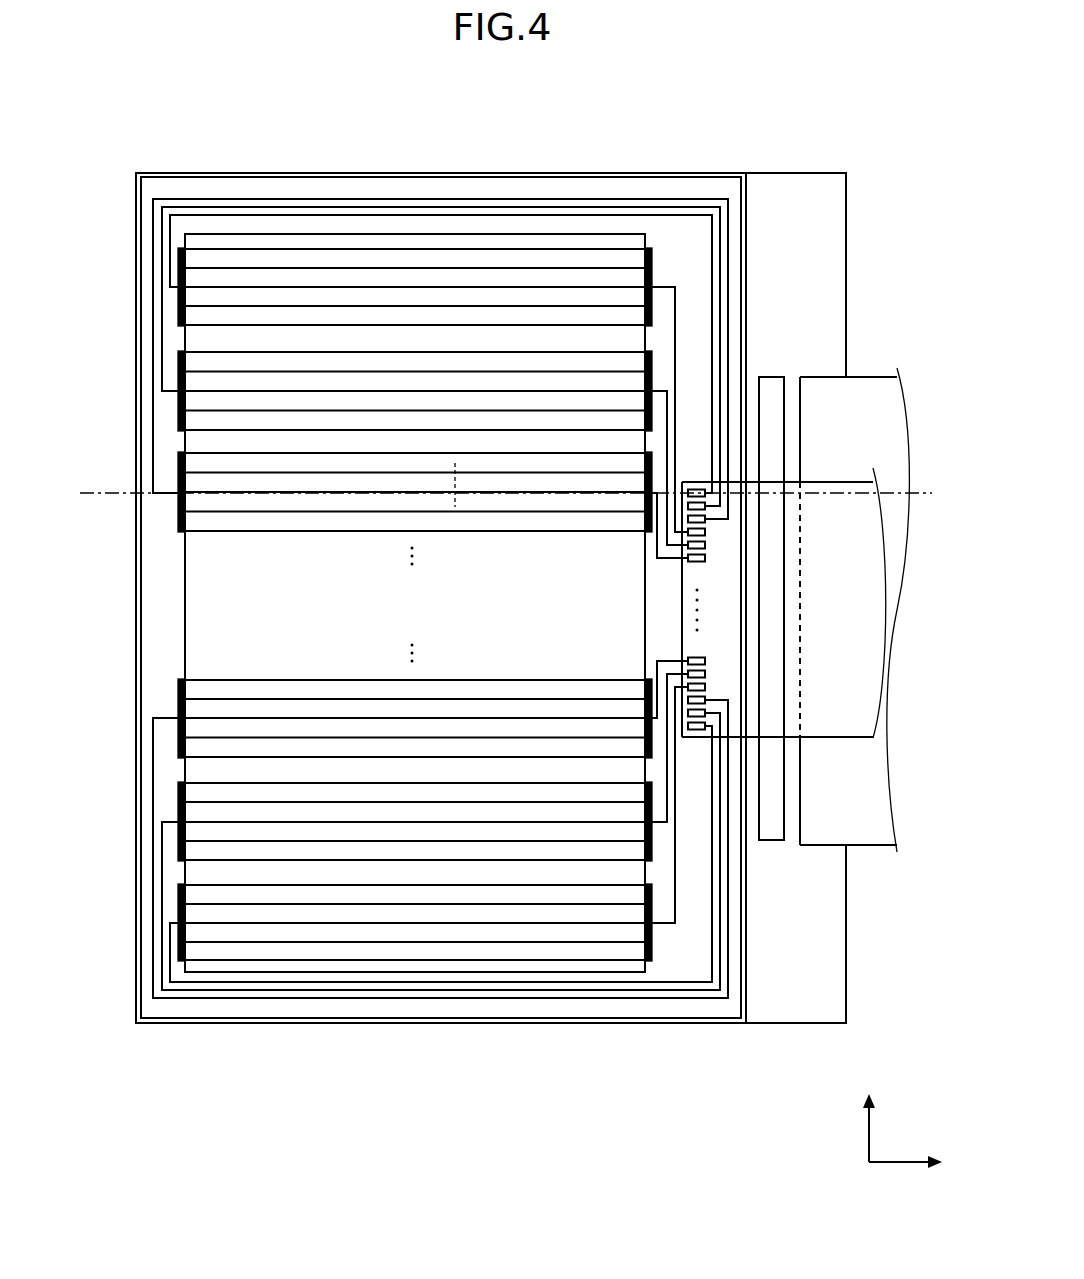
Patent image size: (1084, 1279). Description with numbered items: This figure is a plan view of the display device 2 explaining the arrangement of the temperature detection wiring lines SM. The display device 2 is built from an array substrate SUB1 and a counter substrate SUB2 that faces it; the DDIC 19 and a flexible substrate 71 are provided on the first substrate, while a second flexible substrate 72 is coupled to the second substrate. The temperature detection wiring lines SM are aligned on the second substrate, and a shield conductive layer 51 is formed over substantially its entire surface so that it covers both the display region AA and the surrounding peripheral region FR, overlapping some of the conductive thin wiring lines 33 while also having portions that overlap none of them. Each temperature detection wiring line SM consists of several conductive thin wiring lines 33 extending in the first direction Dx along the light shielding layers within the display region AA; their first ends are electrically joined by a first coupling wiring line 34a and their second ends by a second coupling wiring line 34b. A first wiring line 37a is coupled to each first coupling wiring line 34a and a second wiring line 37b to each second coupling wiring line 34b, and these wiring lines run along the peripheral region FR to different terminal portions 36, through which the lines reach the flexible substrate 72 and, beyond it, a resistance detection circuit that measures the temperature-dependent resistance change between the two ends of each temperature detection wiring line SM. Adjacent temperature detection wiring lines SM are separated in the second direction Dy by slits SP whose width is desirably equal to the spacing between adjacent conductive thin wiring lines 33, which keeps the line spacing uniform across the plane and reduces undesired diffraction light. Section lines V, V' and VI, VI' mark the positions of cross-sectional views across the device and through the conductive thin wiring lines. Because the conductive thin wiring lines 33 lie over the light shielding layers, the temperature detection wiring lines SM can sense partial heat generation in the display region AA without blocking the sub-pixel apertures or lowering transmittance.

The display device 2 is at (491, 607).
The array substrate SUB1 is at (794, 1031).
The counter substrate SUB2 is at (207, 1031).
The shield conductive layer 51 is at (345, 177).
The display region AA is at (291, 224).
The peripheral region FR is at (428, 560).
The temperature detection wiring line SM is at (446, 541).
The conductive thin wiring line 33 is at (577, 325).
The first coupling wiring line 34a is at (178, 263).
The second coupling wiring line 34b is at (652, 271).
The first wiring line 37a is at (170, 280).
The second wiring line 37b is at (677, 304).
The terminal portion 36 is at (697, 489).
The DDIC 19 is at (772, 402).
The flexible substrate 71 is at (862, 822).
The flexible substrate 72 is at (857, 597).
The slit SP is at (207, 875).
The section line V is at (503, 520).
The section line V' is at (933, 520).
The section line VI is at (488, 492).
The section line VI' is at (491, 457).
The first direction Dx is at (908, 1163).
The second direction Dy is at (866, 1140).